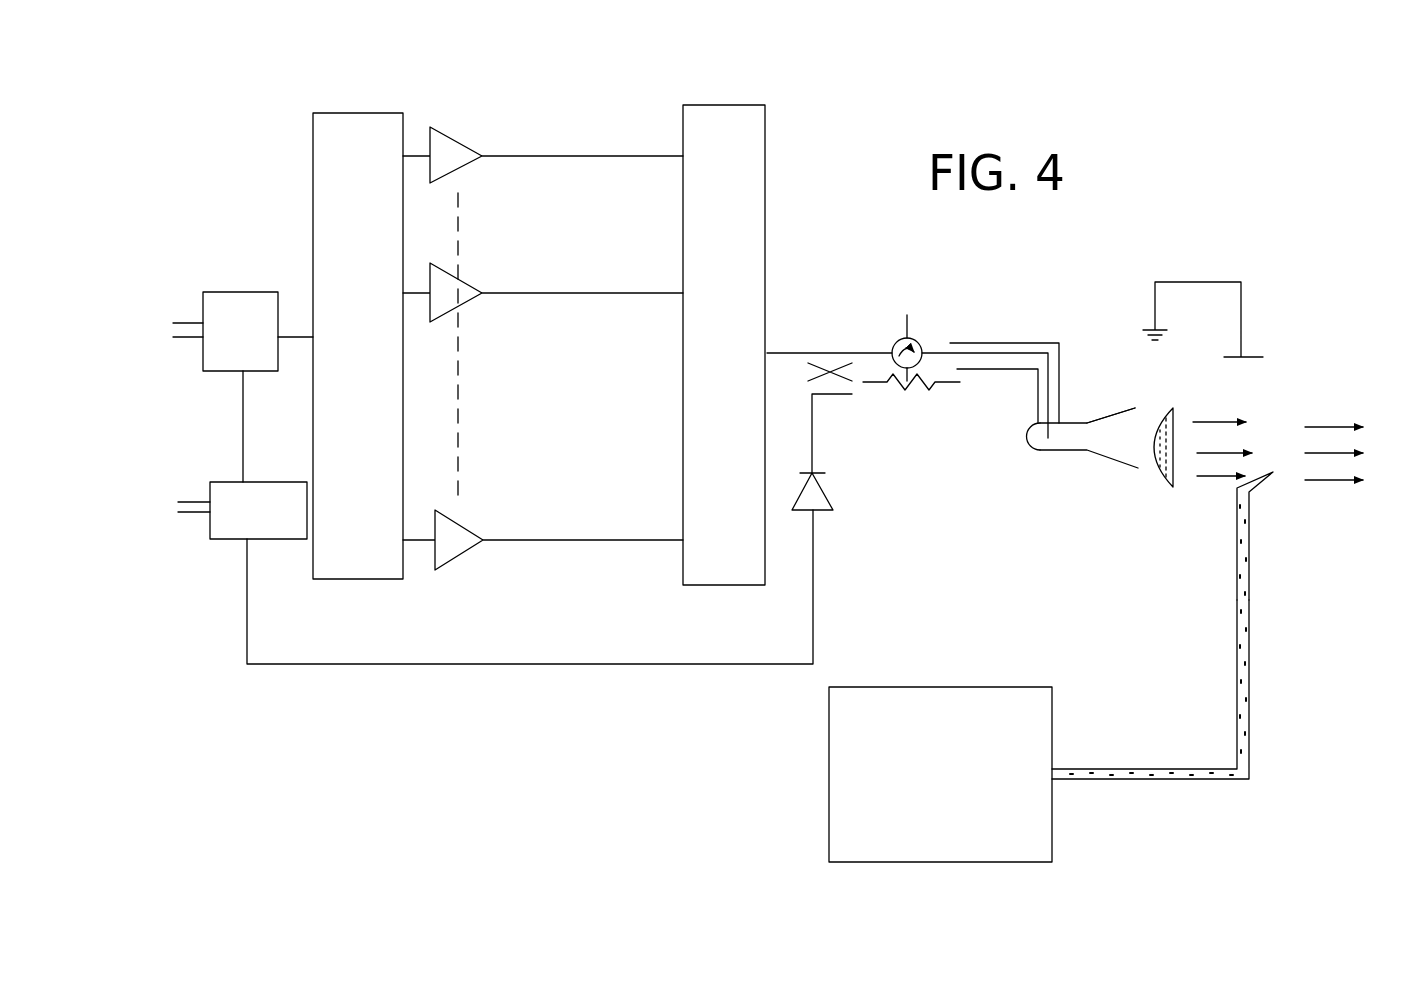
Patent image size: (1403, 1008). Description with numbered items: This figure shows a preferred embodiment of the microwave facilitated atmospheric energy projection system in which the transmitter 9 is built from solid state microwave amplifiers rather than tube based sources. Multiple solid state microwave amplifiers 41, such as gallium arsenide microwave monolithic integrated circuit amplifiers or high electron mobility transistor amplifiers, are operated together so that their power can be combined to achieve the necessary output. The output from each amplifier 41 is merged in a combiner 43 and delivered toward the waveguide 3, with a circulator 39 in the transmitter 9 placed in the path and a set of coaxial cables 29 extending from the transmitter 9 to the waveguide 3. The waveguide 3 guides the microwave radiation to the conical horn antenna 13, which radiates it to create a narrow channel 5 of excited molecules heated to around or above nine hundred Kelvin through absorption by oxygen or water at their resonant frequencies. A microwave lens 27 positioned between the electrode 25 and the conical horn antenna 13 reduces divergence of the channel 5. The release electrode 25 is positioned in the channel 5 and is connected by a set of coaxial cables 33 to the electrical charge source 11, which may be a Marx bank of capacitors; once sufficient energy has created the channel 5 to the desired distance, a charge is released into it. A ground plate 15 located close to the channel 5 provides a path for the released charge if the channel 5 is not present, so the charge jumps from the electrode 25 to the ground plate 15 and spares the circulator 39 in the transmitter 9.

The waveguide 3 is at (1076, 423).
The channel 5 is at (1266, 433).
The transmitter 9 is at (568, 116).
The charge source 11 is at (1030, 834).
The conical horn antenna 13 is at (1117, 410).
The ground plate 15 is at (1212, 282).
The electrode 25 is at (1254, 494).
The microwave lens 27 is at (1166, 482).
The set of coaxial cables 29 is at (1025, 343).
The set of coaxial cables 33 is at (1249, 668).
The circulator 39 is at (918, 340).
The solid state microwave amplifiers 41 is at (459, 142).
The combiner 43 is at (747, 105).